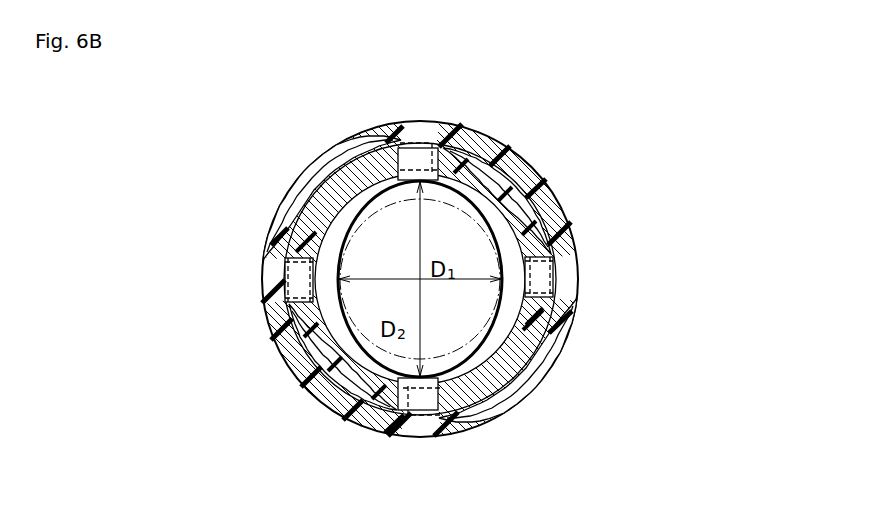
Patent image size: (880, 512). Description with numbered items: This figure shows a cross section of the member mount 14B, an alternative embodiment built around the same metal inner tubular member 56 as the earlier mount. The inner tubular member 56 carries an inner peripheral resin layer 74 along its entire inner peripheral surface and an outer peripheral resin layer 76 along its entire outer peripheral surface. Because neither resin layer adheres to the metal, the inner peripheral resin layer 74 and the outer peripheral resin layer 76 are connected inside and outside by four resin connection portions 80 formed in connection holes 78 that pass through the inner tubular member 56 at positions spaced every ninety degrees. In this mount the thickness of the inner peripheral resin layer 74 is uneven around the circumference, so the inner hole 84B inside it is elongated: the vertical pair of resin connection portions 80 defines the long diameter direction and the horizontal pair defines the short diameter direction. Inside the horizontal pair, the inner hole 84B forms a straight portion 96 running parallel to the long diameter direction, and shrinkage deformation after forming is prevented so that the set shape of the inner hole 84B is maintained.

The member mount 14B is at (619, 179).
The inner tubular member 56 is at (514, 167).
The inner peripheral resin layer 74 is at (330, 172).
The outer peripheral resin layer 76 is at (548, 350).
The connection holes 78 is at (439, 148).
The resin connection portions 80 is at (409, 147).
The inner hole 84B is at (478, 366).
The straight portion 96 is at (312, 322).